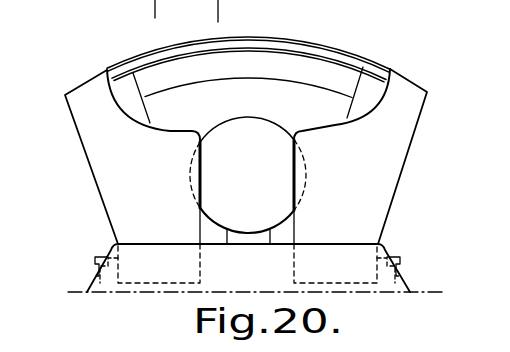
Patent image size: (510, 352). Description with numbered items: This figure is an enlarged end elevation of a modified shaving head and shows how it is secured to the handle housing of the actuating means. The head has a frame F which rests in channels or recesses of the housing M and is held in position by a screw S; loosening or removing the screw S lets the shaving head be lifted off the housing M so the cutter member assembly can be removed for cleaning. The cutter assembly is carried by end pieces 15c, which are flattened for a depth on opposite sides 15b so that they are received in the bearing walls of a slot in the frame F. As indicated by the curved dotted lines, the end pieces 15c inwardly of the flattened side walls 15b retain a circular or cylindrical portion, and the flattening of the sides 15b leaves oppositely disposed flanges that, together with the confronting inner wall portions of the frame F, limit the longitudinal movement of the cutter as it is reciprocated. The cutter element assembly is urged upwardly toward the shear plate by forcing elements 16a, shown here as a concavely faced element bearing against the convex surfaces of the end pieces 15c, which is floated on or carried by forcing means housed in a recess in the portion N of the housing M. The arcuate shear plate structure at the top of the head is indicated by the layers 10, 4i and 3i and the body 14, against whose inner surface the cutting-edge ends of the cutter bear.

The arcuate body layer 10 is at (167, 72).
The outer rail strip 4i is at (331, 43).
The inner rail strip 3i is at (345, 54).
The body member 14 is at (315, 100).
The frame F is at (72, 119).
The end pieces 15c is at (227, 170).
The flattened sides 15b is at (294, 180).
The forcing elements 16a is at (257, 237).
The screw S is at (95, 257).
The housing M is at (398, 287).
The portion of the housing N is at (212, 277).